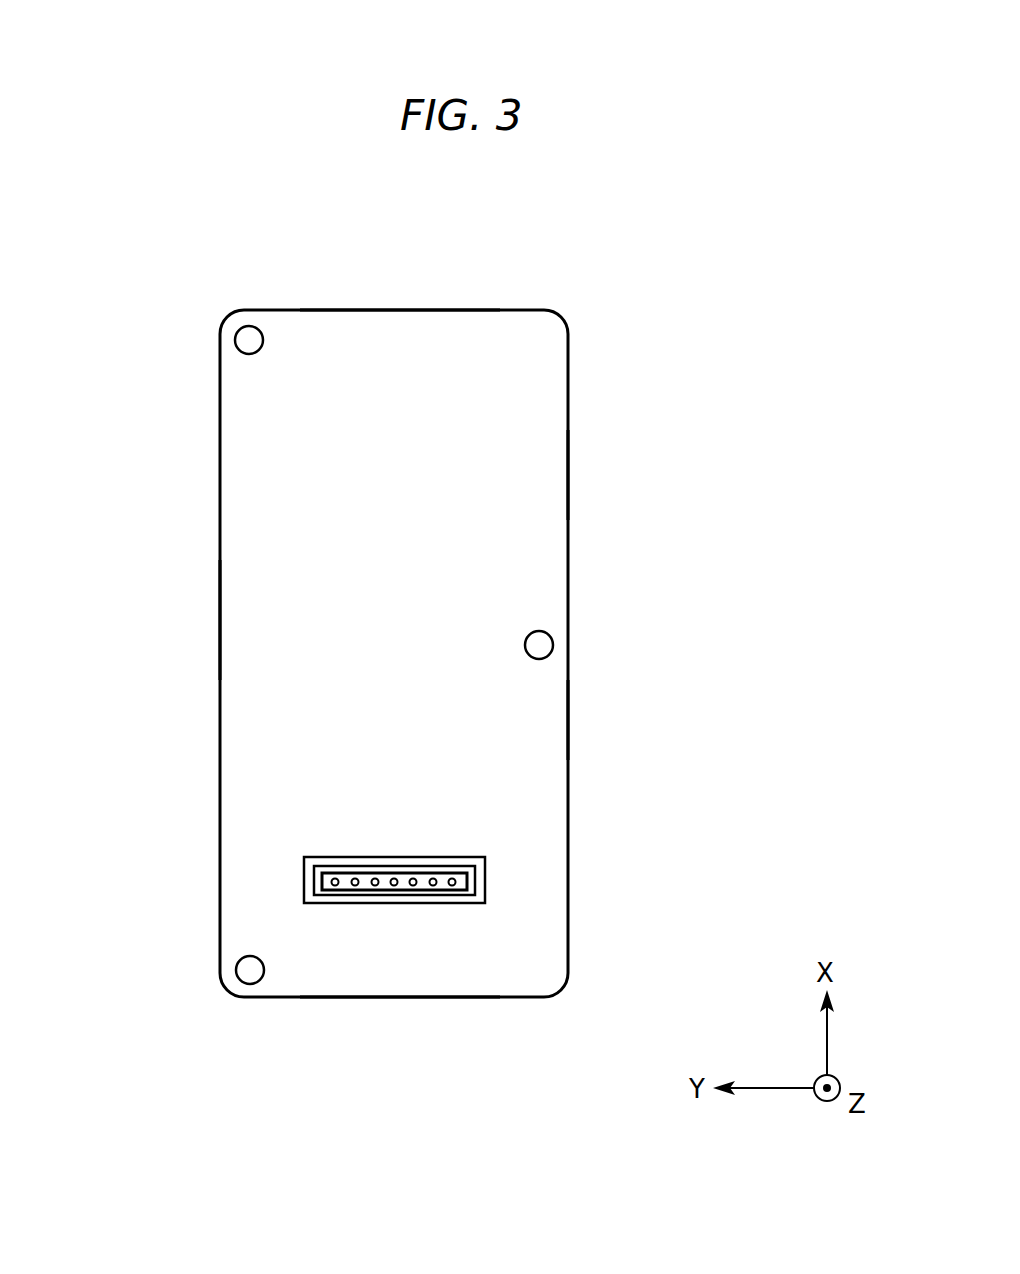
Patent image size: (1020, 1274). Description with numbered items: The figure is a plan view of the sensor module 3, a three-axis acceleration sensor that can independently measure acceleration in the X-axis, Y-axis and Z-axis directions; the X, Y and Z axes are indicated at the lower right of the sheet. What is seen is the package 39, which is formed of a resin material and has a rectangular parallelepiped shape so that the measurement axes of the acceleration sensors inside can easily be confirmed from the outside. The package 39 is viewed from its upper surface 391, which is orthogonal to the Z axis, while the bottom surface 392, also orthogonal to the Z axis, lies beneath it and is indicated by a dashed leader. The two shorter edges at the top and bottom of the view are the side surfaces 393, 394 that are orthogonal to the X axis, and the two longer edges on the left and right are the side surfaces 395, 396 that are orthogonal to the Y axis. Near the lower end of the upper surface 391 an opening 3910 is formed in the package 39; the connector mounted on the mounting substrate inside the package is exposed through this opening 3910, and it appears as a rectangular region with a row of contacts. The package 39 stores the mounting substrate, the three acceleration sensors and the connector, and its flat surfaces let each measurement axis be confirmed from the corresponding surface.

The sensor module 3 is at (158, 412).
The package 39 is at (568, 572).
The upper surface 391 is at (540, 480).
The bottom surface 392 is at (522, 402).
The side surface 393 is at (398, 310).
The side surface 394 is at (400, 997).
The side surface 395 is at (220, 612).
The side surface 396 is at (570, 722).
The opening 3910 is at (487, 880).